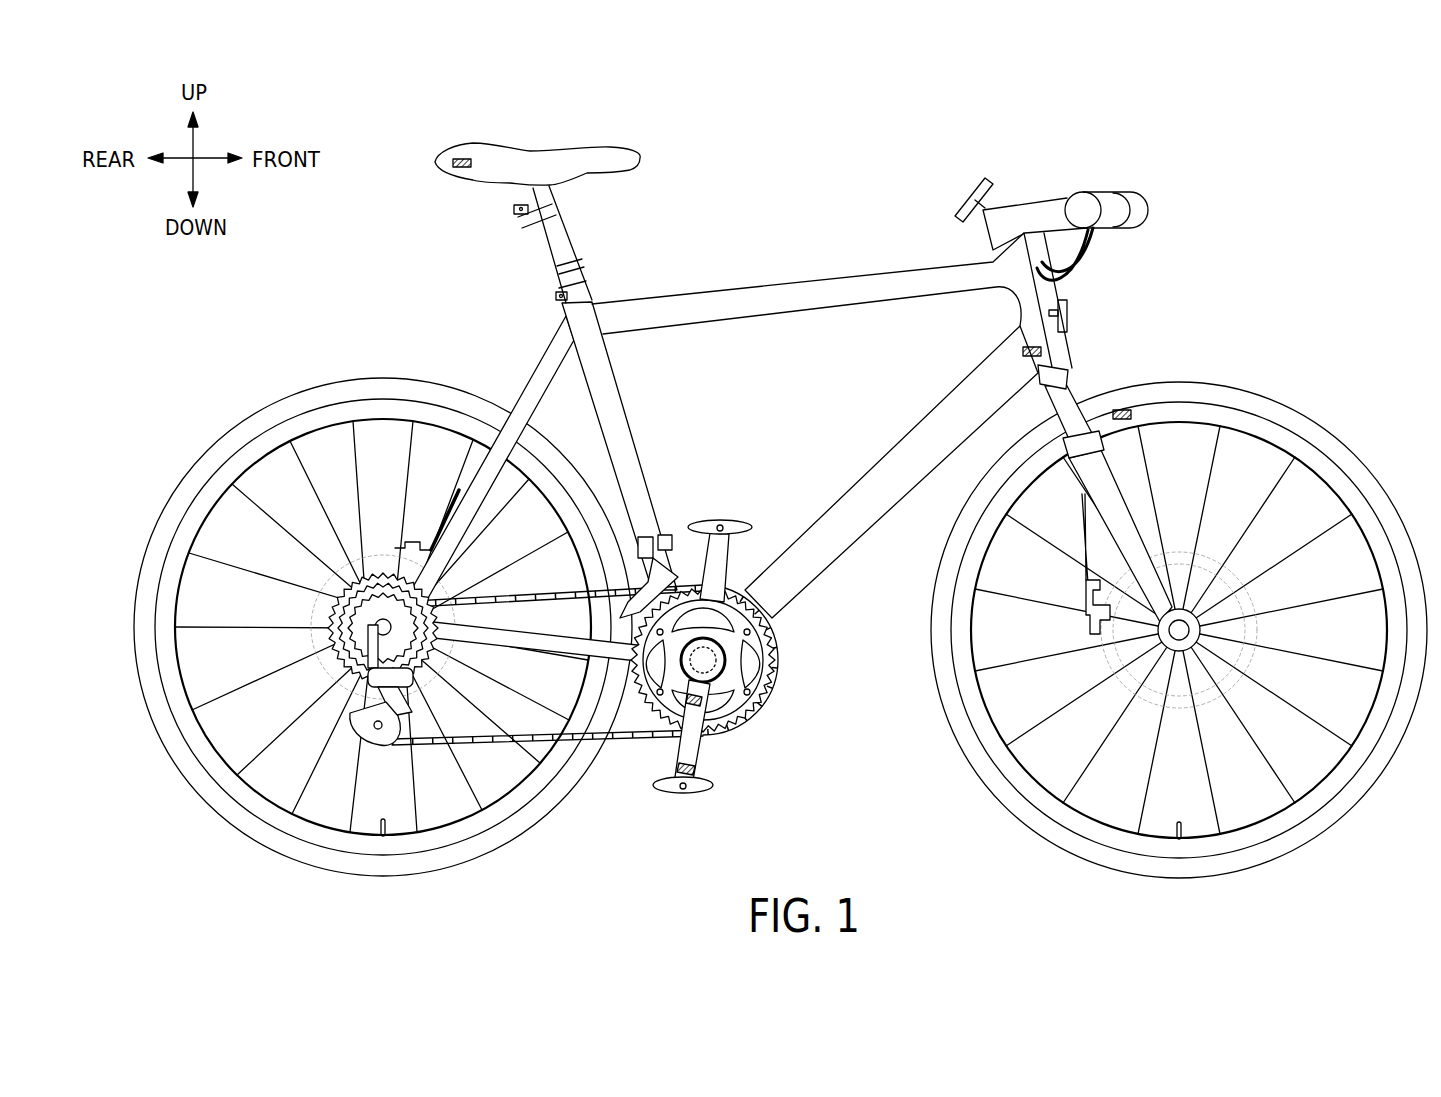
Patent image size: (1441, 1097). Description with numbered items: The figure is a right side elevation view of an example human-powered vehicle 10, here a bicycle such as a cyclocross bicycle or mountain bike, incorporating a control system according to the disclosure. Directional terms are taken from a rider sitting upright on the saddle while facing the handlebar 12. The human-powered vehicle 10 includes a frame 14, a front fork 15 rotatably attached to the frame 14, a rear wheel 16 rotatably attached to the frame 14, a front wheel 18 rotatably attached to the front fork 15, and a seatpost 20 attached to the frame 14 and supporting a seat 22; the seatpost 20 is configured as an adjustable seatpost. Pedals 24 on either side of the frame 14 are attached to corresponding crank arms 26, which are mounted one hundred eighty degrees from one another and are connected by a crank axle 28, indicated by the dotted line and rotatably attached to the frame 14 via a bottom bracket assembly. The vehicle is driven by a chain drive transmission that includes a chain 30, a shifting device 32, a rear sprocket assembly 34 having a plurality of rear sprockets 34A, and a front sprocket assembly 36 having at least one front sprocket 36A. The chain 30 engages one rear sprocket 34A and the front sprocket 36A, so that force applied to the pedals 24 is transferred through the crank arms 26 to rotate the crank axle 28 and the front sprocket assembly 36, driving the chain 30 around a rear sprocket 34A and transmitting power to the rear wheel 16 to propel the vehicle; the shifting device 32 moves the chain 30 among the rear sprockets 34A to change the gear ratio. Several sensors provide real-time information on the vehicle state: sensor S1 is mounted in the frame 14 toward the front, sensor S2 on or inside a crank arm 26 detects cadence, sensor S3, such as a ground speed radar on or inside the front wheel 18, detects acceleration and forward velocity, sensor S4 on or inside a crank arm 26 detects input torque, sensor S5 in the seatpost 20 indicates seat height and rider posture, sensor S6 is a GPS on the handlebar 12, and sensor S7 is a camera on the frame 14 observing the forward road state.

The human-powered vehicle 10 is at (1337, 114).
The handlebar 12 is at (1032, 200).
The frame 14 is at (921, 424).
The front fork 15 is at (1075, 386).
The rear wheel 16 is at (241, 424).
The front wheel 18 is at (1346, 446).
The seatpost 20 is at (553, 262).
The seat 22 is at (508, 150).
The pedals 24 is at (688, 796).
The crank arms 26 is at (708, 745).
The crank axle 28 is at (724, 660).
The chain 30 is at (535, 746).
The shifting device 32 is at (331, 712).
The rear sprocket assembly 34 is at (304, 633).
The rear sprocket 34A is at (326, 622).
The front sprocket assembly 36 is at (786, 640).
The front sprocket 36A is at (762, 625).
The sensor S1 is at (1026, 346).
The sensor S2 is at (706, 700).
The sensor S3 is at (1124, 410).
The sensor S4 is at (700, 773).
The sensor S5 is at (453, 163).
The sensor S6 is at (982, 190).
The sensor S7 is at (1068, 316).